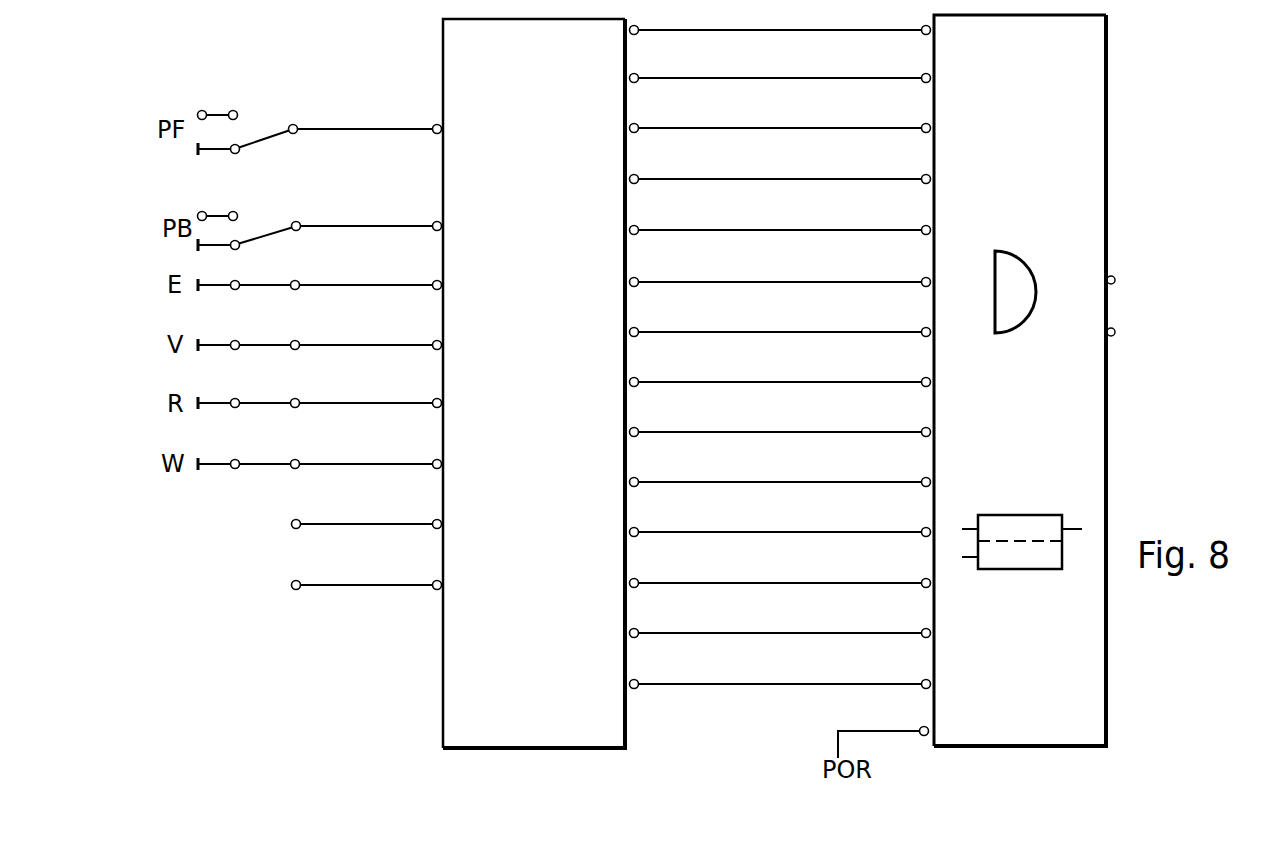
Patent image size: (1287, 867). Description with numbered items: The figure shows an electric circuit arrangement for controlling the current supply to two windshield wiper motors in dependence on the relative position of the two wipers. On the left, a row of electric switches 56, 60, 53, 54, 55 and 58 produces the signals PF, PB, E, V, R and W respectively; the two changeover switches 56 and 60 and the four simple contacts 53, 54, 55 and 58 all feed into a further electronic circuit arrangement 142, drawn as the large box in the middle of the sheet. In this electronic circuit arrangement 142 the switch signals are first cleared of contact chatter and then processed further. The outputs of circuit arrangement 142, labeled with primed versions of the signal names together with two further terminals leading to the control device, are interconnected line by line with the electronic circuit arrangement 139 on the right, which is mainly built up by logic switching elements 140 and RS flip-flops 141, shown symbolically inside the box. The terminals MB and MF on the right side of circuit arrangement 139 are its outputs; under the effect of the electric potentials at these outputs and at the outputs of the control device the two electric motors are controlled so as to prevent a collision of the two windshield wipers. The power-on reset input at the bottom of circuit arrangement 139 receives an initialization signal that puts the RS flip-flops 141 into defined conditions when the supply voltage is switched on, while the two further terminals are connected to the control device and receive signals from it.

The electric switch 53 is at (287, 247).
The electric switch 54 is at (283, 305).
The electric switch 55 is at (275, 359).
The electric switch 56 is at (281, 86).
The electric switch 58 is at (268, 420).
The electric switch 60 is at (280, 188).
The electronic circuit arrangement 139 is at (1083, 701).
The logic switching element 140 is at (1010, 272).
The RS flip-flop 141 is at (1013, 525).
The electronic circuit arrangement 142 is at (540, 733).